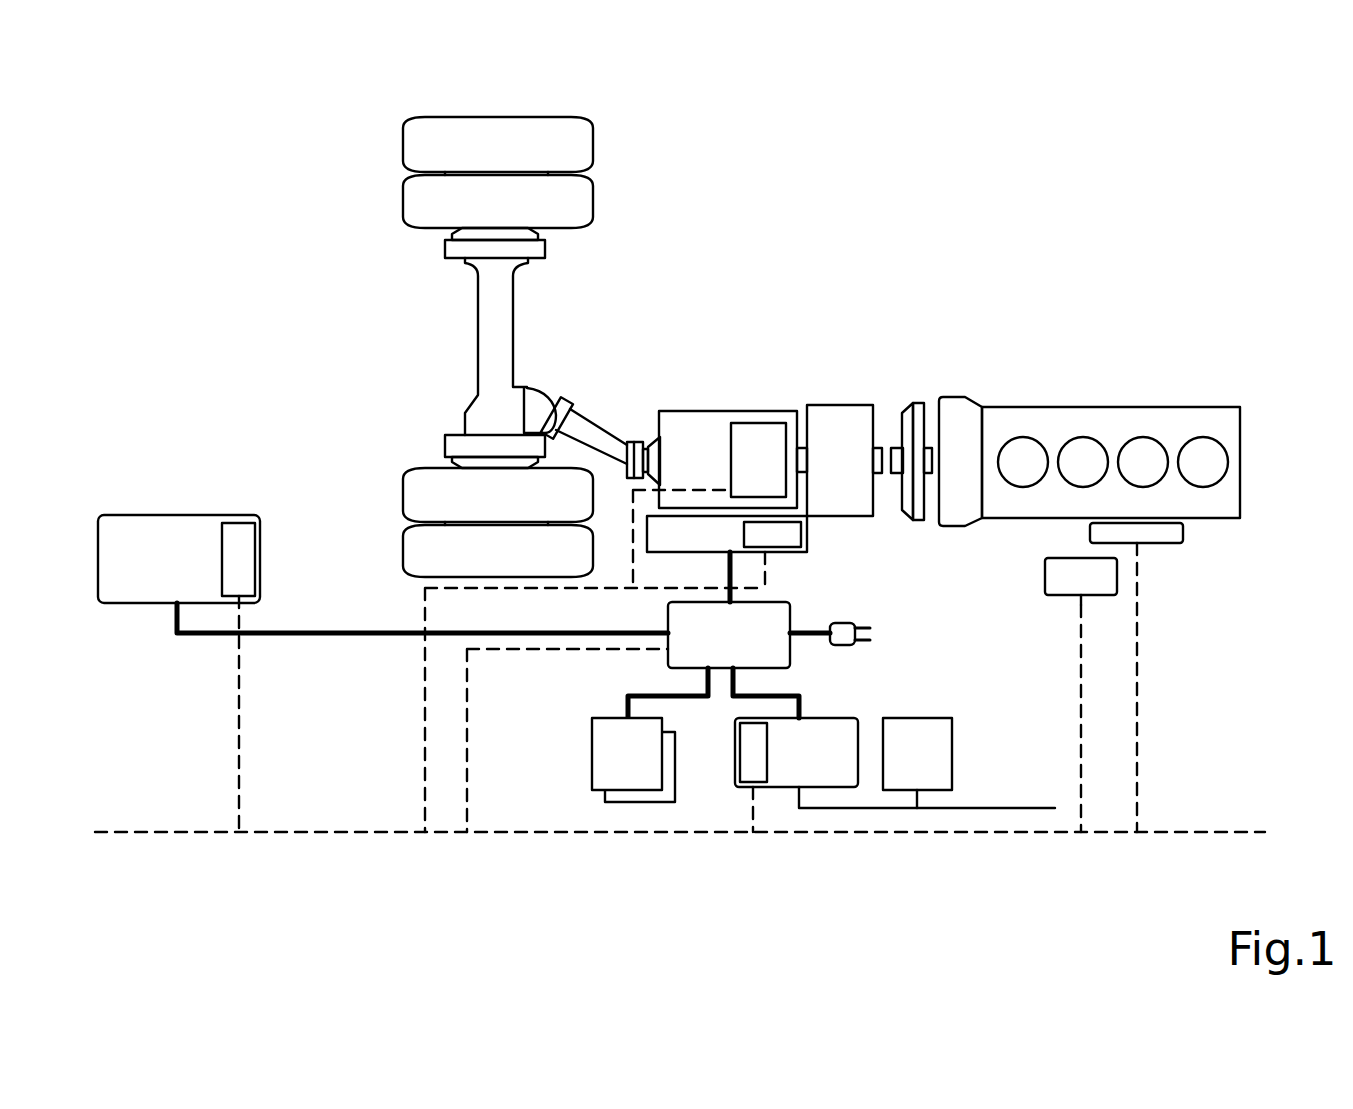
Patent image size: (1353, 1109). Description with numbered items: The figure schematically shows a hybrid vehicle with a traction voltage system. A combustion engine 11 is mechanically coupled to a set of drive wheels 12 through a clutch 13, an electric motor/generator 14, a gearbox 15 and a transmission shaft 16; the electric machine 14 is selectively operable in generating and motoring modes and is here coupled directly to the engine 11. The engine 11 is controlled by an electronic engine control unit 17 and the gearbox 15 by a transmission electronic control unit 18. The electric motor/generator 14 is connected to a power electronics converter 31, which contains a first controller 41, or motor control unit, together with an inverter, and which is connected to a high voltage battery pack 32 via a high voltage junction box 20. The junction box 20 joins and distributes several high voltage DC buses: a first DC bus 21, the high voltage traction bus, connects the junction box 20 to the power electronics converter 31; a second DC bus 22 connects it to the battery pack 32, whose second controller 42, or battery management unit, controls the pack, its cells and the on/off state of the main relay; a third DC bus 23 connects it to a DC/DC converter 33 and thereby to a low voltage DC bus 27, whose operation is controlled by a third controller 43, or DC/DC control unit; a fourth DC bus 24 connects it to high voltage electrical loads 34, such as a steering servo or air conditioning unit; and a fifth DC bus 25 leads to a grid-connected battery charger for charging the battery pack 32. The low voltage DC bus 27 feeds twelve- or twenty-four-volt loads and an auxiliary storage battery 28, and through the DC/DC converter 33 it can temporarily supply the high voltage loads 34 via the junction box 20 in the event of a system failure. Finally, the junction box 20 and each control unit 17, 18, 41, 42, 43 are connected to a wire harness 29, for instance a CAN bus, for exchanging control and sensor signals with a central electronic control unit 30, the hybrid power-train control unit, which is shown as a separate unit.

The combustion engine 11 is at (1121, 382).
The drive wheels 12 is at (660, 171).
The clutch 13 is at (918, 404).
The electric motor/generator 14 is at (850, 404).
The gearbox 15 is at (708, 445).
The transmission shaft 16 is at (597, 420).
The electronic engine control unit 17 is at (1172, 534).
The transmission electronic control unit 18 is at (762, 443).
The high voltage junction box 20 is at (688, 649).
The first DC bus 21 is at (732, 568).
The second DC bus 22 is at (190, 635).
The third DC bus 23 is at (787, 692).
The fourth DC bus 24 is at (685, 697).
The fifth DC bus 25 is at (808, 628).
The low voltage DC bus 27 is at (965, 812).
The auxiliary storage battery 28 is at (909, 770).
The wire harness 29 is at (1037, 837).
The central electronic control unit 30 is at (1097, 582).
The power electronics converter 31 is at (693, 537).
The high voltage battery pack 32 is at (135, 537).
The DC/DC converter 33 is at (819, 760).
The high voltage electrical loads 34 is at (593, 808).
The first controller 41 is at (787, 542).
The second controller 42 is at (240, 535).
The third controller 43 is at (755, 765).